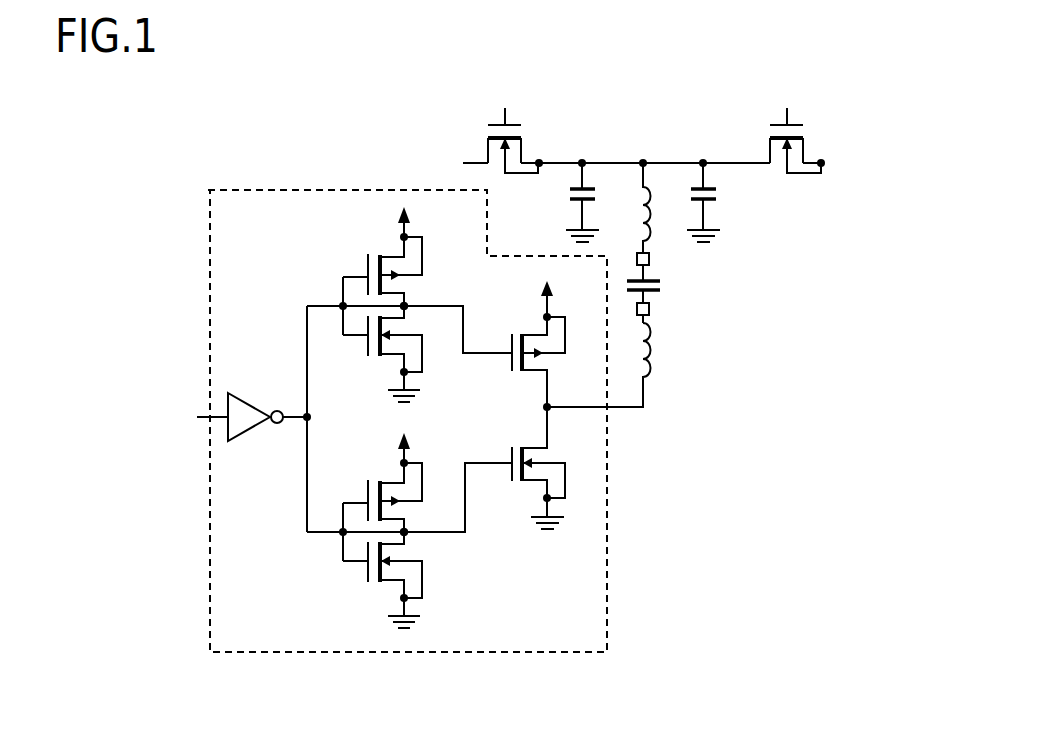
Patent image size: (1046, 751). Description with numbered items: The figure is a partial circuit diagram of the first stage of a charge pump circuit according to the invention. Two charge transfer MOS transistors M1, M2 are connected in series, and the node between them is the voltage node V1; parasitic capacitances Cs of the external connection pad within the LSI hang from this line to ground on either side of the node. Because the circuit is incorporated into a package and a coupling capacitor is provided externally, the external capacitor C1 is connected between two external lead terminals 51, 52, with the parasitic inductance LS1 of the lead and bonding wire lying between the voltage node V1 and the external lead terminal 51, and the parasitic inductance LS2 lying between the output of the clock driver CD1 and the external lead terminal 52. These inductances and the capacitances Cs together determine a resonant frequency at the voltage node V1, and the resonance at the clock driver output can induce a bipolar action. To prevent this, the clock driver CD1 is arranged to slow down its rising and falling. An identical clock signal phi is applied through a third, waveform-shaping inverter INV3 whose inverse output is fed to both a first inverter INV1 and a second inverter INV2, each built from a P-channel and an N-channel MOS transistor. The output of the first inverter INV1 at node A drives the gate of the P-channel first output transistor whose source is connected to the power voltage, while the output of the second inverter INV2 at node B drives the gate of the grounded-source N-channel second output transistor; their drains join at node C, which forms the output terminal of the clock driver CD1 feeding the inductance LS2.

The charge transfer MOS transistor M1 is at (815, 140).
The charge transfer MOS transistor M2 is at (528, 140).
The parasitic capacitance Cs is at (659, 202).
The voltage node V1 is at (642, 150).
The parasitic inductance LS1 is at (658, 213).
The parasitic inductance LS2 is at (660, 358).
The external lead terminal 51 is at (658, 263).
The external lead terminal 52 is at (660, 310).
The external capacitor C1 is at (665, 288).
The clock driver CD1 is at (488, 632).
The first inverter INV1 is at (317, 304).
The second inverter INV2 is at (359, 567).
The third inverter INV3 is at (248, 396).
The node A is at (425, 305).
The node B is at (440, 532).
The node C is at (552, 411).
The clock signal phi is at (178, 418).